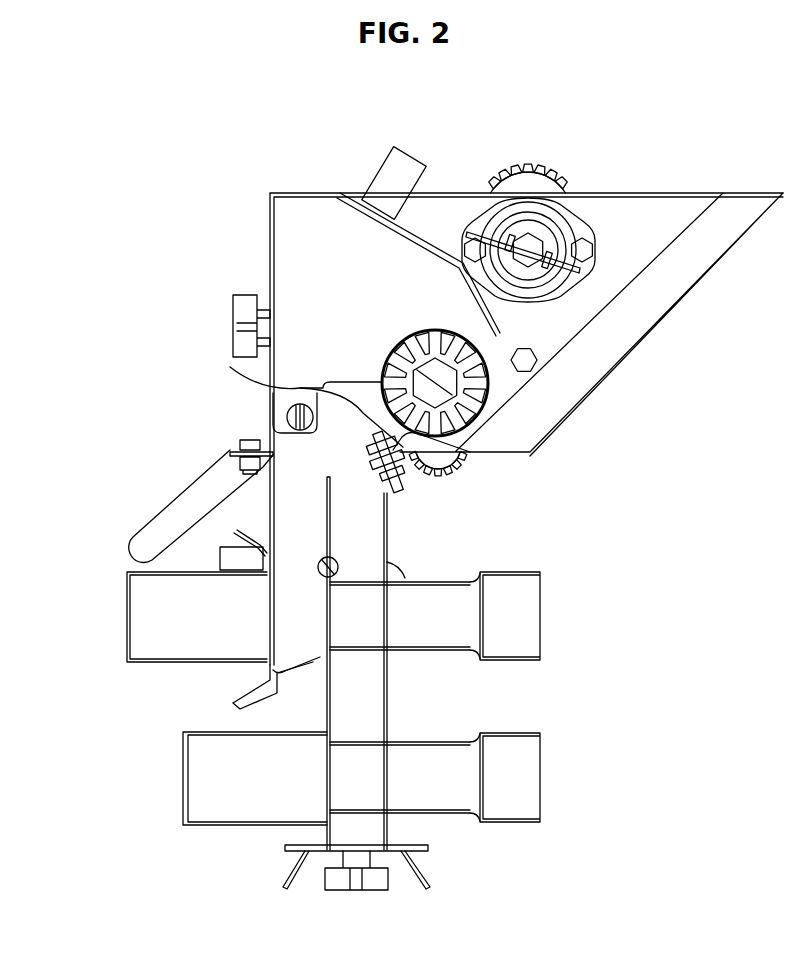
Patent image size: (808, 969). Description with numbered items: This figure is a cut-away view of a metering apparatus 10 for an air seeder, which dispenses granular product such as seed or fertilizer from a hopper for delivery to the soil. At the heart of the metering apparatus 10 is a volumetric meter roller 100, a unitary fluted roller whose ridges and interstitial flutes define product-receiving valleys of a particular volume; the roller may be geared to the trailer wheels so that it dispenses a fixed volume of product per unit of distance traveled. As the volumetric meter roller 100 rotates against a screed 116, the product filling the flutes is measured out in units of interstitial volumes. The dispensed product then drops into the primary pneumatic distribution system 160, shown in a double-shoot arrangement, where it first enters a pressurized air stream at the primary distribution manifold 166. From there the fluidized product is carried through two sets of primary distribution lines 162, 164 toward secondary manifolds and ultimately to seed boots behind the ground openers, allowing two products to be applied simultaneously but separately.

The volumetric meter roller 100 is at (492, 402).
The screed 116 is at (272, 391).
The metering apparatus 10 is at (458, 472).
The primary pneumatic distribution system 160 is at (202, 683).
The primary distribution line 162 is at (522, 610).
The primary distribution line 164 is at (522, 777).
The primary distribution manifold 166 is at (373, 695).